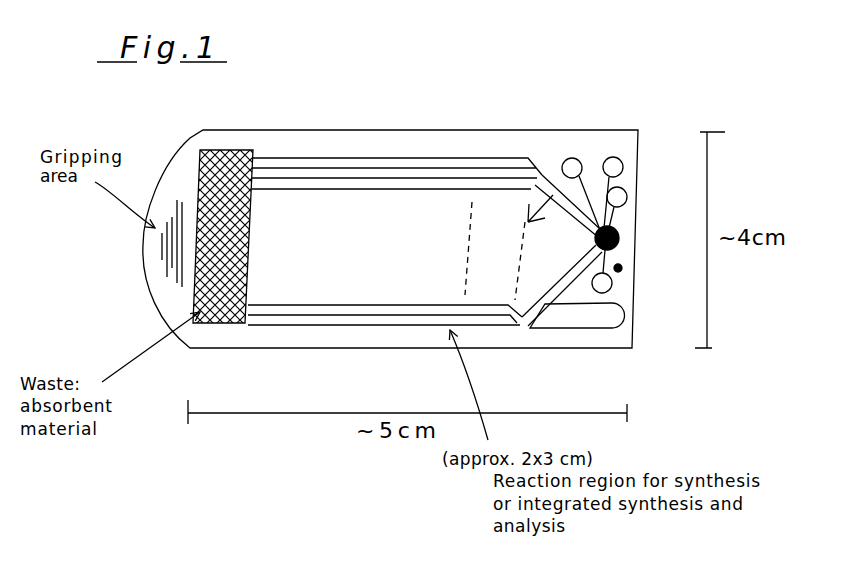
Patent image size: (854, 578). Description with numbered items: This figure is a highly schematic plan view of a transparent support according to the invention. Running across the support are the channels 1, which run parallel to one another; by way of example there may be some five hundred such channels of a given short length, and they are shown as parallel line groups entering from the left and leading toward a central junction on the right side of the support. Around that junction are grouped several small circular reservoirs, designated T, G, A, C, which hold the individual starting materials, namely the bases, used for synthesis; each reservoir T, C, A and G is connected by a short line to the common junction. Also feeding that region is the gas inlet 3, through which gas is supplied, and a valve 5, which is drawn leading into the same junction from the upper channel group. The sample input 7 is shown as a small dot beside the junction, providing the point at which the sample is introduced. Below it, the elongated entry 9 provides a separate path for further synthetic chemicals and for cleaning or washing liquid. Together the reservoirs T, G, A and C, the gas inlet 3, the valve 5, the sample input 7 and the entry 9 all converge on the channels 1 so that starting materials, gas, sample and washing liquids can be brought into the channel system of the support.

The channels 1 is at (436, 226).
The gas inlet 3 is at (625, 238).
The valve 5 is at (618, 222).
The sample input 7 is at (622, 267).
The entry for further synthetic chemicals and cleaning/washing liquid 9 is at (597, 330).
The reservoir for starting material (base T) T is at (578, 148).
The reservoir for starting material (base C) C is at (630, 150).
The reservoir for starting material (base A) A is at (637, 193).
The reservoir for starting material (base G) G is at (613, 288).